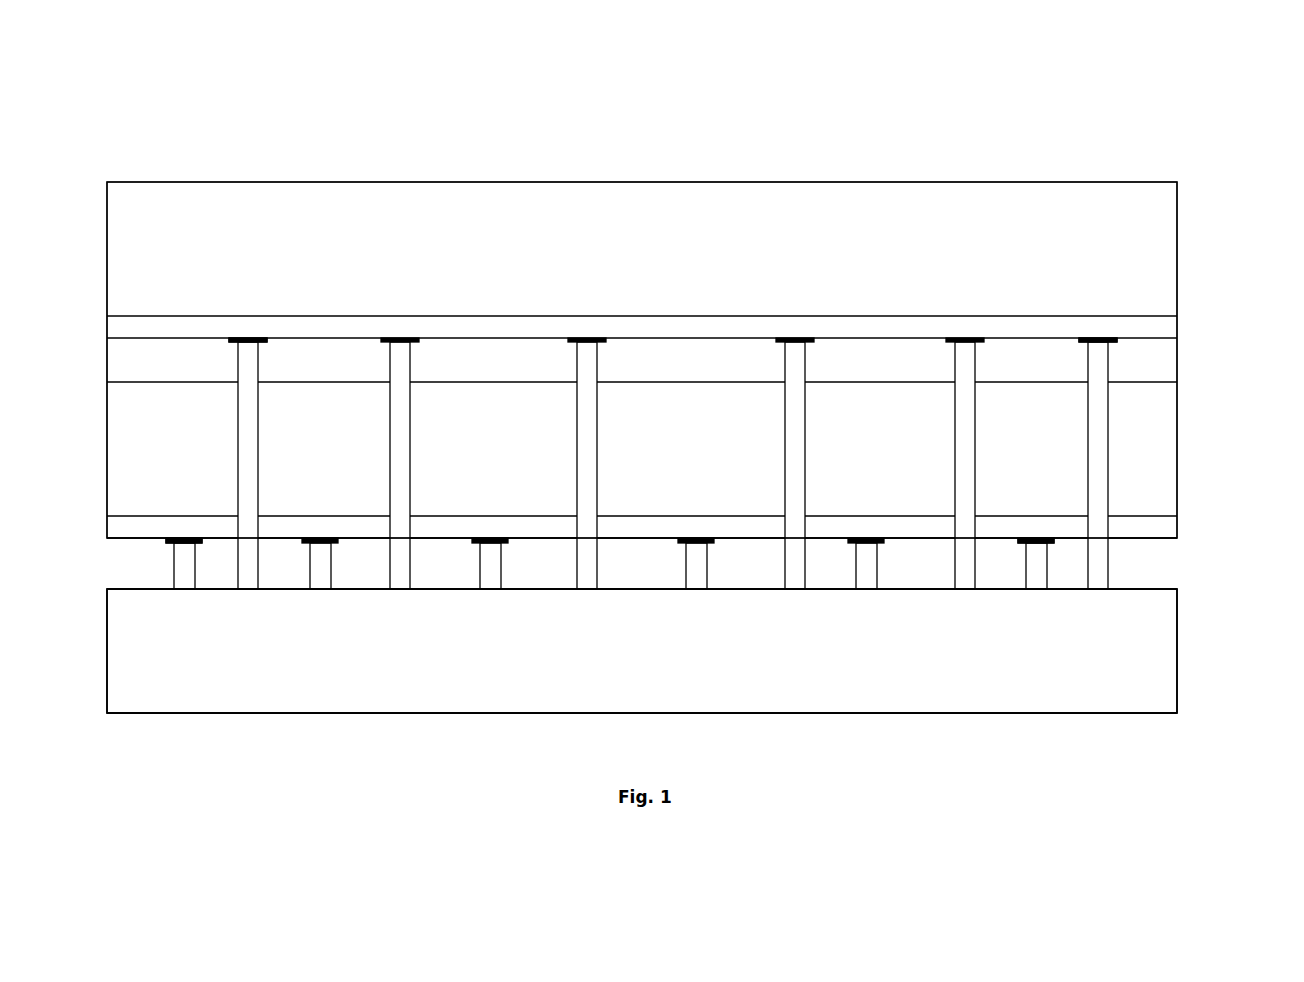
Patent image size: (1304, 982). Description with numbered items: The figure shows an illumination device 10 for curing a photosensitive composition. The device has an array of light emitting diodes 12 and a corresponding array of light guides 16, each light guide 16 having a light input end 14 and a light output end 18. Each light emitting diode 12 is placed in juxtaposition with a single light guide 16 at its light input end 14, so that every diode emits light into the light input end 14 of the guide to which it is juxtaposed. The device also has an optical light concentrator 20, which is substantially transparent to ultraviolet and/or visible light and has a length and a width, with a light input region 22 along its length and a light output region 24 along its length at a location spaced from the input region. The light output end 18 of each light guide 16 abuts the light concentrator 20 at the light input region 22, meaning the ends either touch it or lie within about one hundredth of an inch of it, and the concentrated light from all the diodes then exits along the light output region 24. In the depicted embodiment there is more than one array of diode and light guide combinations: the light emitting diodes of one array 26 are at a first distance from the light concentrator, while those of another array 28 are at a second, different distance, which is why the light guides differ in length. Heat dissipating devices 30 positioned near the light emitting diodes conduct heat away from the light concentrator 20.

The illumination device 10 is at (705, 384).
The light emitting diode 12 is at (641, 453).
The light input end 14 is at (592, 462).
The light guide 16 is at (183, 573).
The light output end 18 is at (248, 589).
The optical light concentrator 20 is at (670, 651).
The light input region 22 is at (670, 568).
The light output region 24 is at (667, 731).
The array of light emitting diode and light guide combinations 26 is at (1252, 523).
The array of light emitting diode and light guide combinations 28 is at (1215, 282).
The heat dissipating device 30 is at (670, 361).